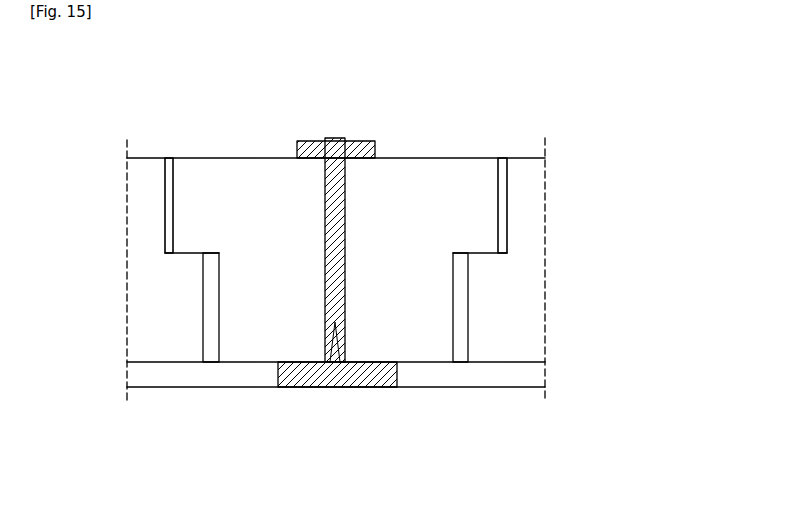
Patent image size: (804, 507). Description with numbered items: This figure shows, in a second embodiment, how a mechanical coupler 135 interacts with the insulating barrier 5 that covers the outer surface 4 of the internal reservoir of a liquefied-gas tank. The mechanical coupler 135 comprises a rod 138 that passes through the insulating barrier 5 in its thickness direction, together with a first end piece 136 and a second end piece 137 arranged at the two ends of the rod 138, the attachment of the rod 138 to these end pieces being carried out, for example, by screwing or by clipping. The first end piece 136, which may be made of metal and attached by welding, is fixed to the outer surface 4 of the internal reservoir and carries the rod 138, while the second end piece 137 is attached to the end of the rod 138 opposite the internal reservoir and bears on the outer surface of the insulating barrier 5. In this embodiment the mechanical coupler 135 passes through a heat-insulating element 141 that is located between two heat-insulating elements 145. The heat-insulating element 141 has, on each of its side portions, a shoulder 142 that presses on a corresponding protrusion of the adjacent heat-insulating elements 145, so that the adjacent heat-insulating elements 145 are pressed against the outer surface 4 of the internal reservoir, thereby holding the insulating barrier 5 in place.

The outer surface 4 is at (155, 386).
The insulating barrier 5 is at (189, 134).
The mechanical coupler 135 is at (383, 187).
The first end piece 136 is at (395, 374).
The second end piece 137 is at (316, 143).
The rod 138 is at (325, 218).
The heat-insulating element 141 is at (424, 345).
The shoulder 142 is at (205, 257).
The heat-insulating elements 145 is at (527, 275).